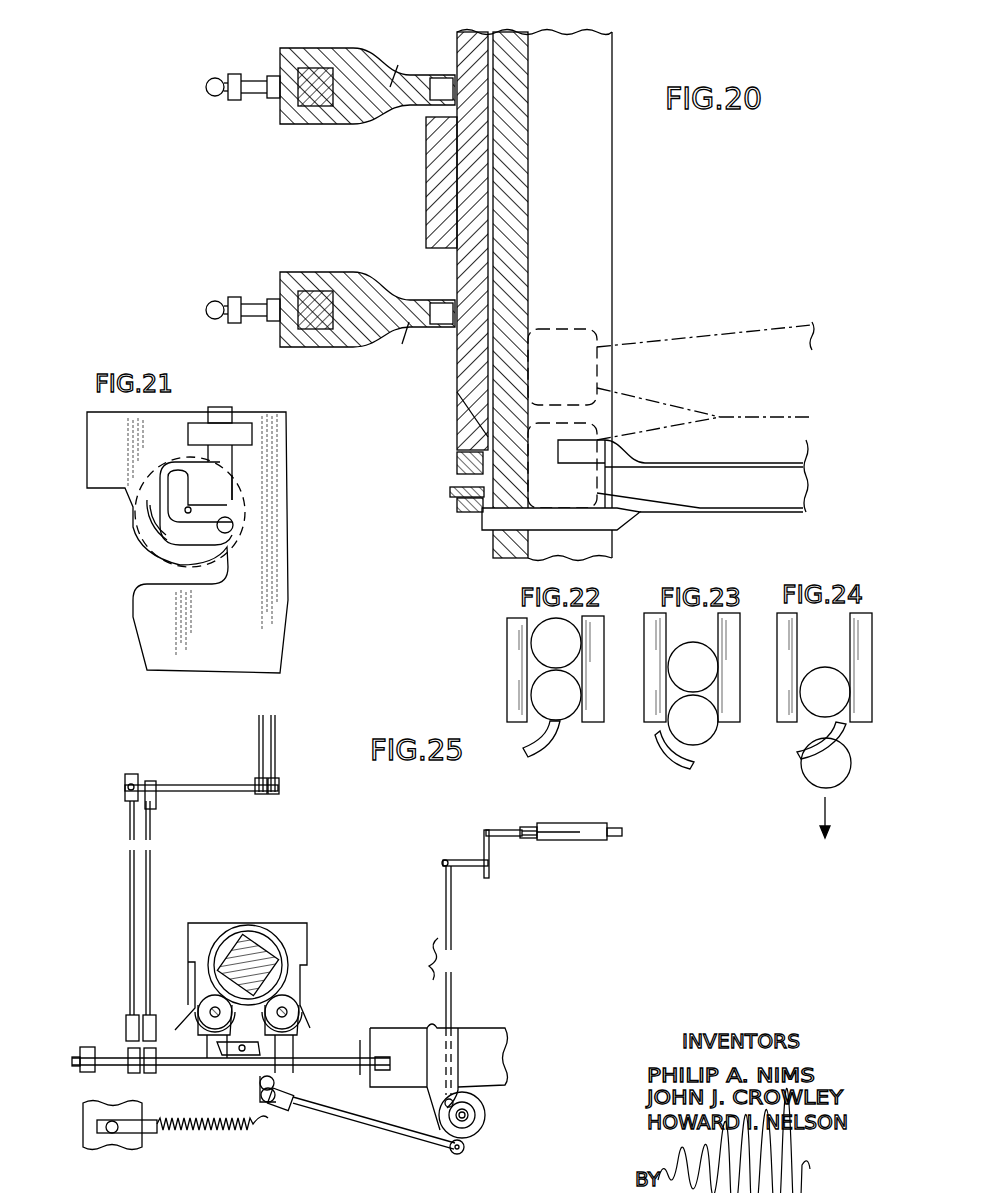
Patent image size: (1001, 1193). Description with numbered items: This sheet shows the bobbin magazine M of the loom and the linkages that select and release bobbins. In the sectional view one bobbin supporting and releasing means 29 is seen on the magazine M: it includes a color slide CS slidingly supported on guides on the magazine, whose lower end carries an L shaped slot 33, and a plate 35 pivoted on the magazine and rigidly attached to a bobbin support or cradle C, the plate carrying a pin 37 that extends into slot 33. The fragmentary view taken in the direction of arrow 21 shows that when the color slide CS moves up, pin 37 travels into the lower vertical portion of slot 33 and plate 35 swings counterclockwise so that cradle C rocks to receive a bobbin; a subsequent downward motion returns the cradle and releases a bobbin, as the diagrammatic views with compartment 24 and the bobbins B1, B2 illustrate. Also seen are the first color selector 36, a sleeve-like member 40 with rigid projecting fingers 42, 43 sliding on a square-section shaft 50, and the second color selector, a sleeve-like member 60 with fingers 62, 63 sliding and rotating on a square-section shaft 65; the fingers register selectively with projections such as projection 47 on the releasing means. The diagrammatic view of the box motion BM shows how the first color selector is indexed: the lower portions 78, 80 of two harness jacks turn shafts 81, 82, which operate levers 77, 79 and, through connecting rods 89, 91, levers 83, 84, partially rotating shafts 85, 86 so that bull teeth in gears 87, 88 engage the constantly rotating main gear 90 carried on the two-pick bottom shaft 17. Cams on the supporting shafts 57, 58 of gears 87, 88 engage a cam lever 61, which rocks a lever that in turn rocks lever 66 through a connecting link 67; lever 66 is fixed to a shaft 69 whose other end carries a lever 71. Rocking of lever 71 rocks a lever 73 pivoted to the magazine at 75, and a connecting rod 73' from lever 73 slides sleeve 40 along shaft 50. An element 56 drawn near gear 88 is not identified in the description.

In FIG. 20, the magazine M is at (600, 232).
In FIG. 23, the magazine M is at (652, 644).
In FIG. 24, the magazine M is at (786, 667).
In FIG. 20, the color slide CS is at (466, 403).
In FIG. 21, the color slide CS is at (222, 462).
In FIG. 20, the bobbin support or cradle C is at (618, 509).
In FIG. 21, the bobbin support or cradle C is at (152, 543).
In FIG. 22, the bobbin support or cradle C is at (546, 731).
In FIG. 23, the bobbin support or cradle C is at (668, 736).
In FIG. 24, the bobbin support or cradle C is at (800, 746).
In FIG. 20, the projection 47 is at (440, 179).
In FIG. 20, the sleeve-like member 60 is at (327, 66).
In FIG. 20, the finger 62 is at (398, 64).
In FIG. 20, the finger 63 is at (441, 88).
In FIG. 20, the shaft 65 is at (313, 90).
In FIG. 25, the shaft 65 is at (276, 1084).
In FIG. 20, the sleeve-like member 40 is at (323, 290).
In FIG. 25, the sleeve-like member 40 is at (592, 841).
In FIG. 20, the finger 42 is at (441, 318).
In FIG. 20, the finger 43 is at (400, 344).
In FIG. 20, the shaft 50 is at (313, 318).
In FIG. 25, the shaft 50 is at (532, 840).
In FIG. 20, the L shaped slot 33 is at (464, 480).
In FIG. 21, the L shaped slot 33 is at (191, 508).
In FIG. 20, the pin 37 is at (452, 492).
In FIG. 21, the pin 37 is at (227, 535).
In FIG. 20, the plate 35 is at (458, 504).
In FIG. 21, the plate 35 is at (180, 547).
In FIG. 20, the bobbin supporting and releasing means 29 is at (460, 519).
In FIG. 20, the arrow 21 is at (436, 447).
In FIG. 22, the compartment 24 is at (533, 667).
In FIG. 22, the first bottle B1 is at (556, 695).
In FIG. 23, the first bottle B1 is at (693, 720).
In FIG. 24, the first bottle B1 is at (826, 763).
In FIG. 22, the second bottle B2 is at (556, 643).
In FIG. 23, the second bottle B2 is at (693, 667).
In FIG. 24, the second bottle B2 is at (825, 692).
In FIG. 25, the lower portion 78 is at (256, 743).
In FIG. 25, the lower portion 80 is at (277, 749).
In FIG. 25, the shaft 81 is at (166, 786).
In FIG. 25, the shaft 82 is at (126, 775).
In FIG. 25, the lever 79 is at (124, 789).
In FIG. 25, the lever 77 is at (156, 796).
In FIG. 25, the connecting rod 91 is at (130, 870).
In FIG. 25, the connecting rod 89 is at (151, 870).
In FIG. 25, the lever 84 is at (130, 1027).
In FIG. 25, the lever 83 is at (156, 1050).
In FIG. 25, the shaft 86 is at (112, 1066).
In FIG. 25, the shaft 85 is at (167, 1063).
In FIG. 25, the box motion BM is at (308, 892).
In FIG. 25, the bottom shaft 17 is at (258, 960).
In FIG. 25, the main gear 90 is at (283, 967).
In FIG. 25, the supporting shaft 57 is at (212, 1010).
In FIG. 25, the gear 87 is at (208, 1003).
In FIG. 25, the supporting shaft 58 is at (289, 1018).
In FIG. 25, the gear 88 is at (289, 1005).
In FIG. 25, the lever assembly 56 is at (320, 1008).
In FIG. 25, the cam lever 61 is at (253, 1056).
In FIG. 25, the connecting link 67 is at (368, 1122).
In FIG. 25, the lever 73 is at (465, 849).
In FIG. 25, the pivot 75 is at (478, 866).
In FIG. 25, the connecting rod 73' is at (508, 820).
In FIG. 25, the first color selector 36 is at (614, 844).
In FIG. 25, the lever 71 is at (453, 918).
In FIG. 25, the shaft 69 is at (468, 1119).
In FIG. 25, the lever 66 is at (462, 1152).